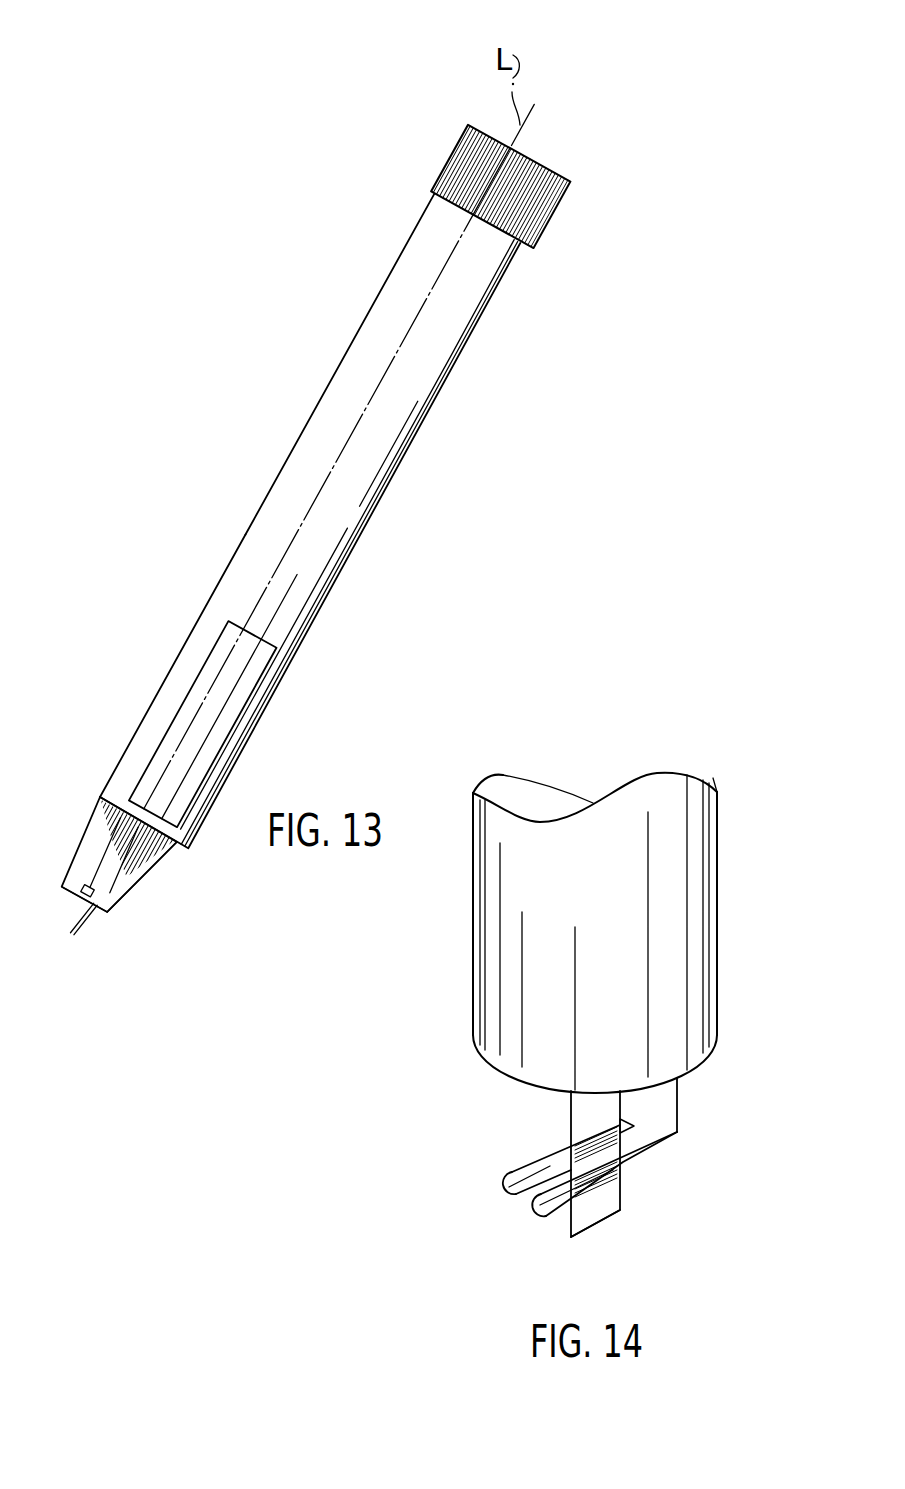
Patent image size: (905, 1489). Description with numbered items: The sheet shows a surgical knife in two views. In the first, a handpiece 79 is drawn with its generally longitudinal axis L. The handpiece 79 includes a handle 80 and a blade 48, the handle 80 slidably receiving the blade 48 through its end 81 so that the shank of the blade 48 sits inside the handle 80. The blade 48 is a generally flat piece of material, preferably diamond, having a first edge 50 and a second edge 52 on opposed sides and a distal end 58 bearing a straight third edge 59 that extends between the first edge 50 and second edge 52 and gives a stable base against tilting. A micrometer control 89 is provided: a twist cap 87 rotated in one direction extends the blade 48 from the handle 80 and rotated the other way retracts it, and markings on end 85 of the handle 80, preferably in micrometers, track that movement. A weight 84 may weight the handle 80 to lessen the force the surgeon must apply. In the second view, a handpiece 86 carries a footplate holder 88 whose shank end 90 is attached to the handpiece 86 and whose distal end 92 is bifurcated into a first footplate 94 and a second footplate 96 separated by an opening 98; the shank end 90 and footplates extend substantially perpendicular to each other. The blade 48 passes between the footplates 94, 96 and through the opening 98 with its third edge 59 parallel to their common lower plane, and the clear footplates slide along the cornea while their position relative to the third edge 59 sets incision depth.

In FIG. 13, the micrometer control 89 is at (440, 99).
In FIG. 13, the twist cap 87 is at (556, 180).
In FIG. 13, the handpiece 86 is at (418, 209).
In FIG. 14, the handpiece 86 is at (690, 920).
In FIG. 13, the end of handle 85 is at (527, 250).
In FIG. 13, the handle 80 is at (457, 358).
In FIG. 13, the weight 84 is at (227, 700).
In FIG. 13, the end of handle 81 is at (124, 746).
In FIG. 13, the handpiece 79 is at (271, 340).
In FIG. 13, the blade 48 is at (66, 834).
In FIG. 14, the blade 48 is at (590, 1120).
In FIG. 13, the first edge 50 is at (78, 855).
In FIG. 13, the second edge 52 is at (140, 878).
In FIG. 13, the distal end 58 is at (91, 875).
In FIG. 13, the third edge 59 is at (97, 912).
In FIG. 14, the third edge 59 is at (603, 1222).
In FIG. 14, the shank end 90 is at (683, 1078).
In FIG. 14, the footplate holder 88 is at (696, 1103).
In FIG. 14, the first footplate 94 is at (623, 1155).
In FIG. 14, the second footplate 96 is at (512, 1175).
In FIG. 14, the opening 98 is at (516, 1210).
In FIG. 14, the distal end 92 is at (472, 1199).